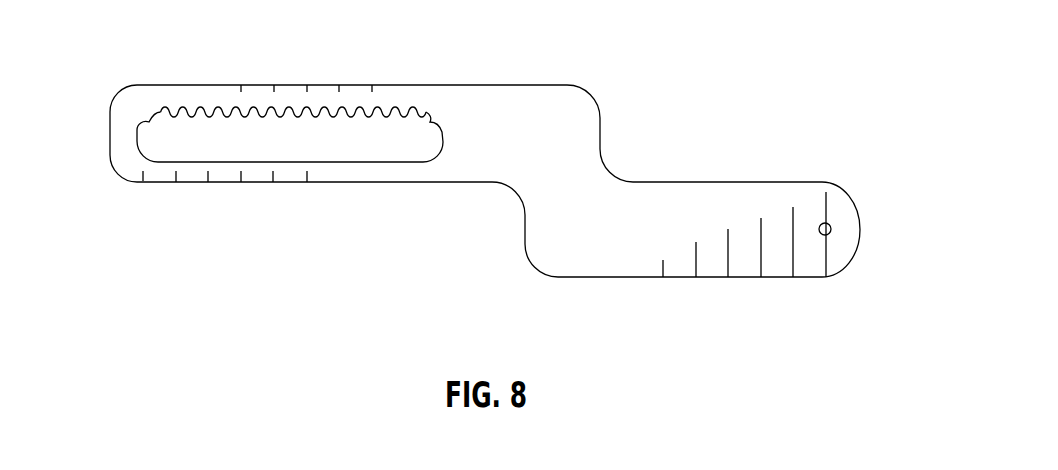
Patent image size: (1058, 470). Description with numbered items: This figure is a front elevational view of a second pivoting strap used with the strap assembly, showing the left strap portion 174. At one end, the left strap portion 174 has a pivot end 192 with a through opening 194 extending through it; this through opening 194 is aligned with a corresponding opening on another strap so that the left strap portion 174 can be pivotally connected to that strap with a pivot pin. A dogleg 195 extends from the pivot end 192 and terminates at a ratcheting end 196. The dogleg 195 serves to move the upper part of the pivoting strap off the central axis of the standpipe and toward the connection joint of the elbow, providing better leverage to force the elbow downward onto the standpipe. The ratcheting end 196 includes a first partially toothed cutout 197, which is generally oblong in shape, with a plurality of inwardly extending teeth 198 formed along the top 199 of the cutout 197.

The left strap portion 174 is at (723, 190).
The pivot end 192 is at (827, 183).
The through opening 194 is at (831, 229).
The dogleg 195 is at (602, 132).
The ratcheting end 196 is at (222, 183).
The first partially toothed cutout 197 is at (140, 137).
The teeth 198 is at (188, 114).
The top of cutout 199 is at (258, 85).